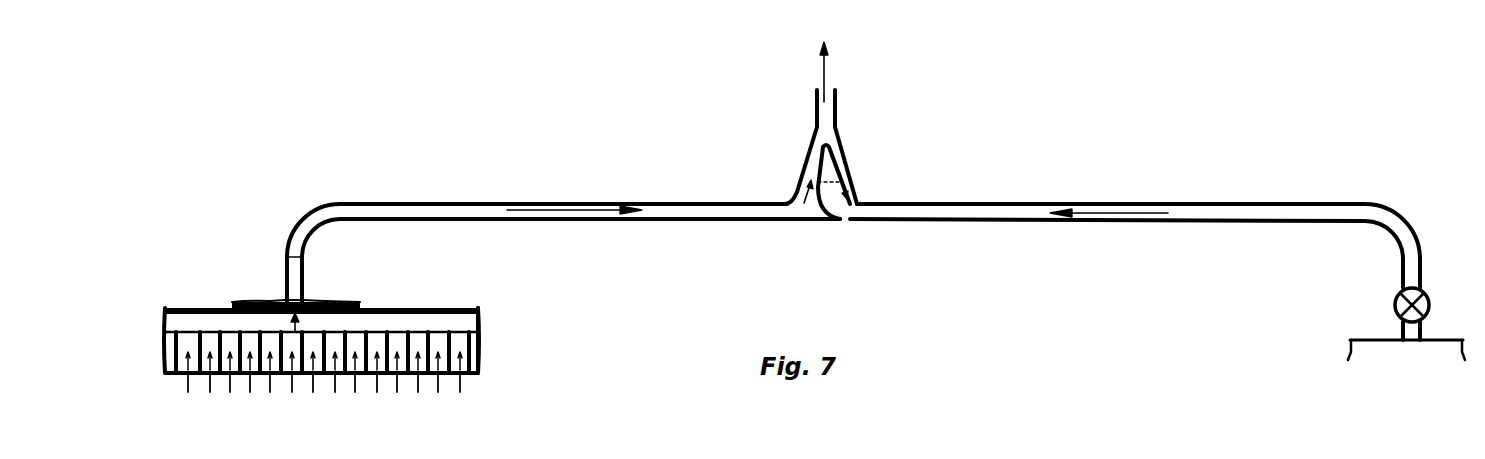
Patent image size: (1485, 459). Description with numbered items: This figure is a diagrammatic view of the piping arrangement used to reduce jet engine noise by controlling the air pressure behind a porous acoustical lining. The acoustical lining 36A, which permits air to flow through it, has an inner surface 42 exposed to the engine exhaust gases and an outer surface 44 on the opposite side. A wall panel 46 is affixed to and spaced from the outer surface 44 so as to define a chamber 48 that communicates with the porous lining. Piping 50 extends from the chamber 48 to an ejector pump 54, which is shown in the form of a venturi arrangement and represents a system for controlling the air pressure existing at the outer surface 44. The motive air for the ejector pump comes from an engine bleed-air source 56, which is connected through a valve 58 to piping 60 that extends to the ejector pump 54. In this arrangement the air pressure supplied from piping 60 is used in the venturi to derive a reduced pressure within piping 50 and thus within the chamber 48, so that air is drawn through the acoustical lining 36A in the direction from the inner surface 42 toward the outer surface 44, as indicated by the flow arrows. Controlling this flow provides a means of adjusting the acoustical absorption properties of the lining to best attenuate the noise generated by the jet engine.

The acoustical lining 36A is at (462, 345).
The inner surface 42 is at (392, 375).
The outer surface 44 is at (215, 328).
The wall panel 46 is at (203, 308).
The chamber 48 is at (415, 310).
The piping 50 is at (522, 208).
The ejector pump 54 is at (898, 160).
The engine bleed-air source 56 is at (1383, 342).
The valve 58 is at (1425, 307).
The piping 60 is at (1240, 210).